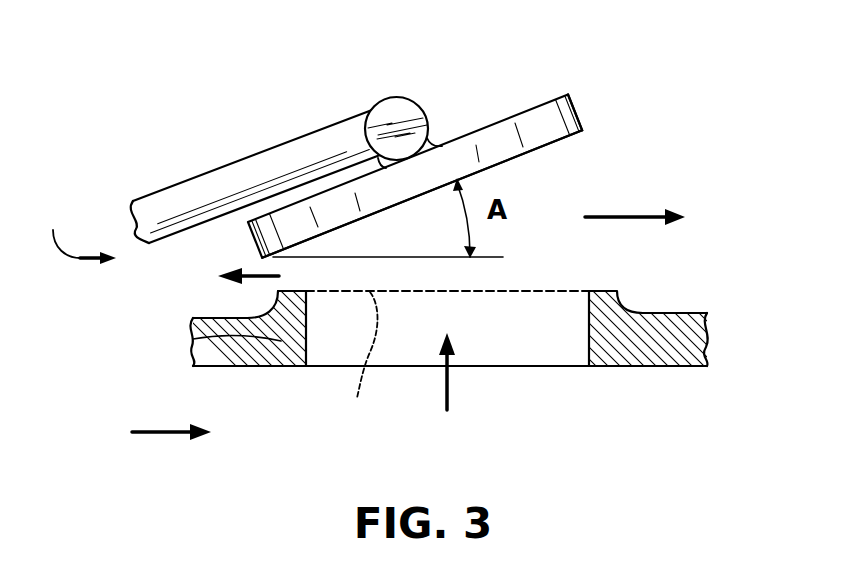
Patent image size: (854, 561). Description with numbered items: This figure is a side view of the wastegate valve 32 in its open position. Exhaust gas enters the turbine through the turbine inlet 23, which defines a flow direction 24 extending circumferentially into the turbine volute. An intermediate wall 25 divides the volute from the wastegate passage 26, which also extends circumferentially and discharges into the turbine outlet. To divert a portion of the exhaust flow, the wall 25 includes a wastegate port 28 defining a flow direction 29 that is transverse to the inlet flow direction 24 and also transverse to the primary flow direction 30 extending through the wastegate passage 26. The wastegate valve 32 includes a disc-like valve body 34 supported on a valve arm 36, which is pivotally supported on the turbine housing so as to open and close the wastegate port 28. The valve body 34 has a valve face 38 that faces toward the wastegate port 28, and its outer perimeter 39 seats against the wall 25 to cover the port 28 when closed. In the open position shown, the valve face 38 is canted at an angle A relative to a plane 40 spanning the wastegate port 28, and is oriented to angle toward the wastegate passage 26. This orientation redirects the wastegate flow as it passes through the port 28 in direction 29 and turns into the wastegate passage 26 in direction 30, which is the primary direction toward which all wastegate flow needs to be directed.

The turbine inlet 23 is at (279, 419).
The flow direction 24 is at (165, 431).
The intermediate wall 25 is at (187, 340).
The wastegate passage 26 is at (740, 200).
The wastegate port 28 is at (262, 301).
The flow direction 29 is at (449, 387).
The primary flow direction 30 is at (633, 215).
The wastegate valve 32 is at (78, 235).
The valve body 34 is at (533, 120).
The valve arm 36 is at (248, 173).
The valve face 38 is at (563, 139).
The outer perimeter 39 is at (580, 112).
The plane 40 is at (362, 360).